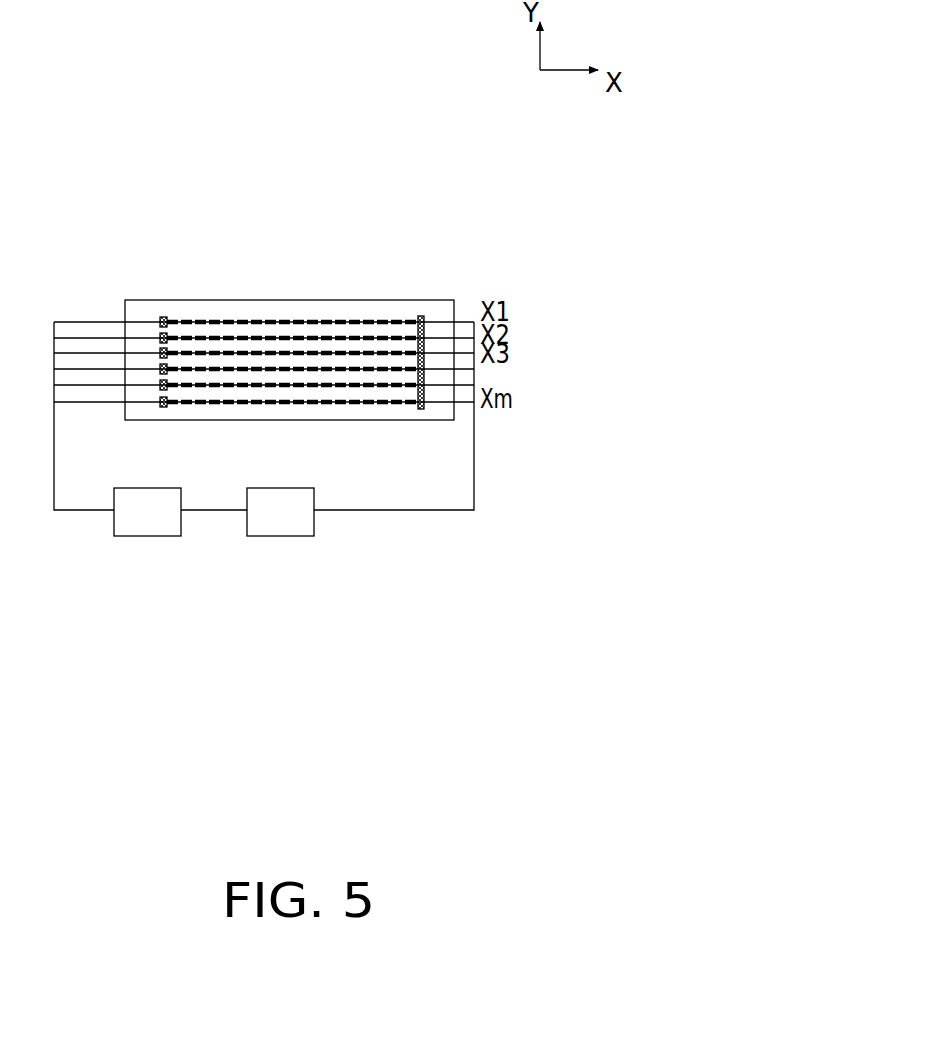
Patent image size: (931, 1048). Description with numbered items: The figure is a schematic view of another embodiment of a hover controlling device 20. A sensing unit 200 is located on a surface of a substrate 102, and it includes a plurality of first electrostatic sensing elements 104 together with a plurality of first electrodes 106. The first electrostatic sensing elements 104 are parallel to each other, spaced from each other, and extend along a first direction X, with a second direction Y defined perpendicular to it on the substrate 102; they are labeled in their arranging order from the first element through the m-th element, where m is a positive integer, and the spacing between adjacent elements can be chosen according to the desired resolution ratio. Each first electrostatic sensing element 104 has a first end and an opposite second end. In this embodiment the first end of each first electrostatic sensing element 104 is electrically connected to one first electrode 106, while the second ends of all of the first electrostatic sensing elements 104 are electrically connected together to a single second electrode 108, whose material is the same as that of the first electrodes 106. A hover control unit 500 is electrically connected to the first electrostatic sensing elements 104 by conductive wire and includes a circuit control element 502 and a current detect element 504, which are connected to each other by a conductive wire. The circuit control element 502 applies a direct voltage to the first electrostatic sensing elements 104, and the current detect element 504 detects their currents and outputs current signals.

The hover controlling device 20 is at (257, 99).
The substrate 102 is at (143, 307).
The first electrostatic sensing elements 104 is at (340, 320).
The first electrodes 106 is at (164, 317).
The second electrode 108 is at (418, 316).
The transparent conductive layer 200 is at (464, 247).
The hover control unit 500 is at (397, 583).
The circuit control element 502 is at (153, 537).
The current detect element 504 is at (283, 536).